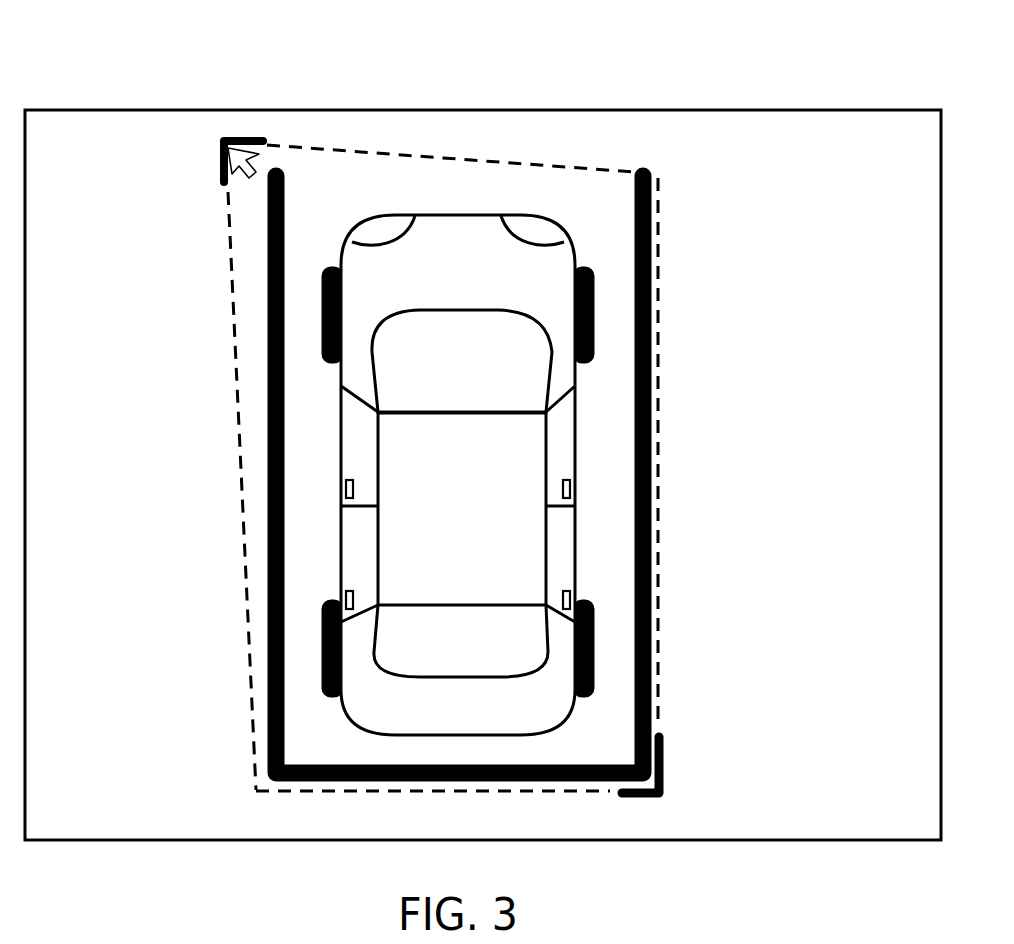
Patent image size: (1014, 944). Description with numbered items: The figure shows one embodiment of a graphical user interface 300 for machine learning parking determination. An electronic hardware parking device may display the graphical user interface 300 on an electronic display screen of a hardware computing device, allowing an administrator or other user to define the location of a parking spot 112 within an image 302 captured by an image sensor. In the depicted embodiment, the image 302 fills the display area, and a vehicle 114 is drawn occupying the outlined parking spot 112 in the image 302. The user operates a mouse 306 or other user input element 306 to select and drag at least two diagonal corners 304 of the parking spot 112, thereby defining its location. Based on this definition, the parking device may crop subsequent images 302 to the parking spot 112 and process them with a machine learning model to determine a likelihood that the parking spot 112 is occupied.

The graphical user interface 300 is at (118, 41).
The image 302 is at (87, 312).
The parking spot 112 is at (655, 582).
The vehicle 114 is at (352, 254).
The diagonal corners 304 is at (221, 141).
The mouse 306 is at (265, 143).